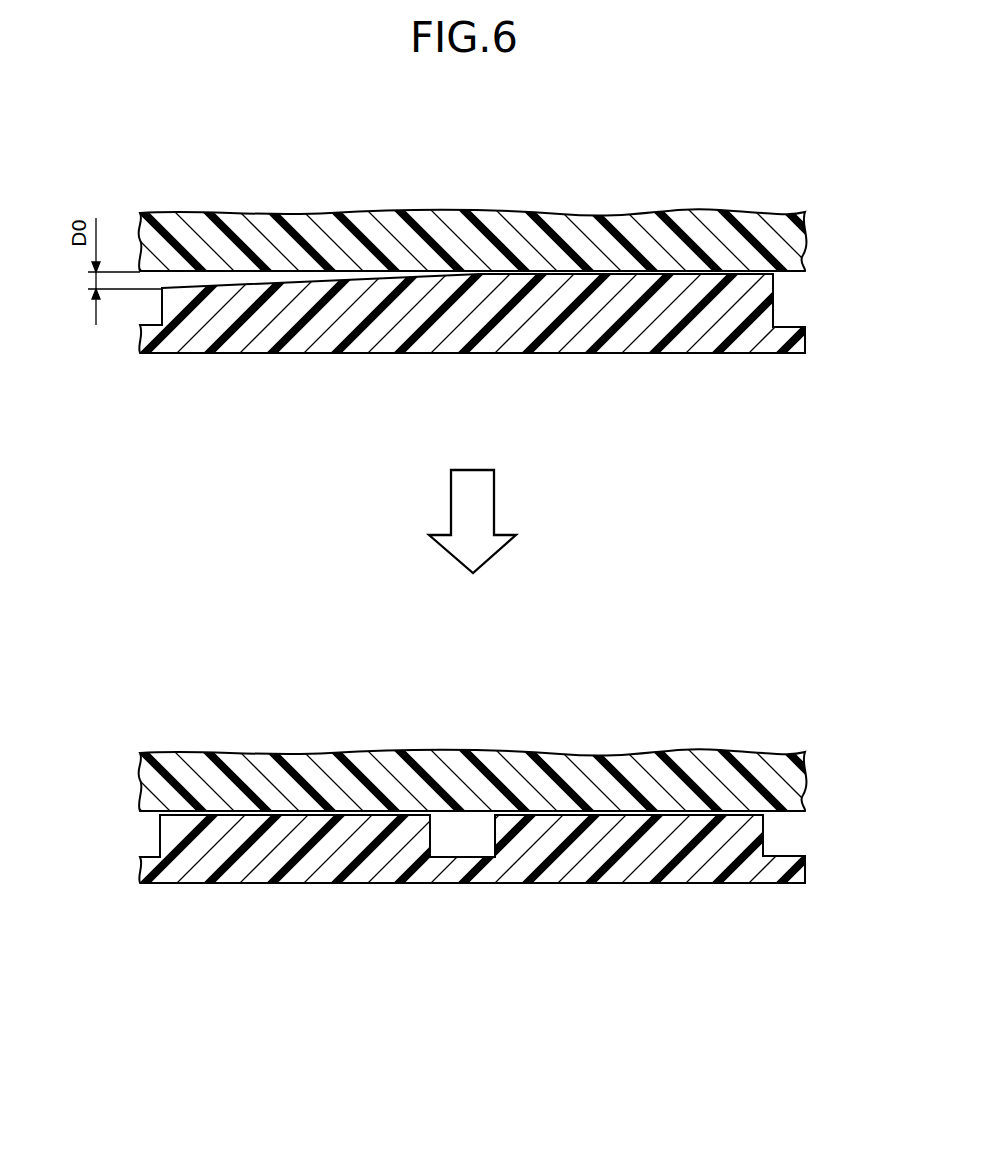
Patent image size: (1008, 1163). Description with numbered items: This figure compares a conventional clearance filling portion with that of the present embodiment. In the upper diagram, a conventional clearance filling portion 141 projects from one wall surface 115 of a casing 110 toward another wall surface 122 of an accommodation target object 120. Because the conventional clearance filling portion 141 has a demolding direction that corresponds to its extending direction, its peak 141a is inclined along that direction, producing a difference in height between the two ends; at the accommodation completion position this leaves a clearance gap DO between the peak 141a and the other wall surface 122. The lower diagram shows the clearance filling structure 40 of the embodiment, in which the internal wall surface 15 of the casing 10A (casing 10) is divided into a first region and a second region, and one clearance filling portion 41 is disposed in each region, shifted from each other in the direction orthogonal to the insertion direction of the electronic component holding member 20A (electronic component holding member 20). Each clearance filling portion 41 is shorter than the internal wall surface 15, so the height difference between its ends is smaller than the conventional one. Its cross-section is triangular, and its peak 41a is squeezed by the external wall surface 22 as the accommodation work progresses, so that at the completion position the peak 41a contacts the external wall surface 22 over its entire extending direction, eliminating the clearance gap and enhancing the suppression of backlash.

The accommodation target object 120 is at (683, 208).
The peak 141a is at (193, 284).
The other wall surface 122 is at (793, 274).
The casing 110 is at (660, 355).
The one wall surface 115 is at (796, 322).
The conventional clearance filling portion 141 is at (162, 306).
The electronic component holding member 20A is at (684, 752).
The electronic component holding member 20 is at (508, 739).
The peak 41a is at (223, 806).
The external wall surface 22 is at (794, 814).
The casing 10A is at (662, 883).
The casing 10 is at (521, 888).
The internal wall surface 15 is at (796, 854).
The clearance filling portion 41 is at (160, 838).
The clearance filling structure 40 is at (264, 888).